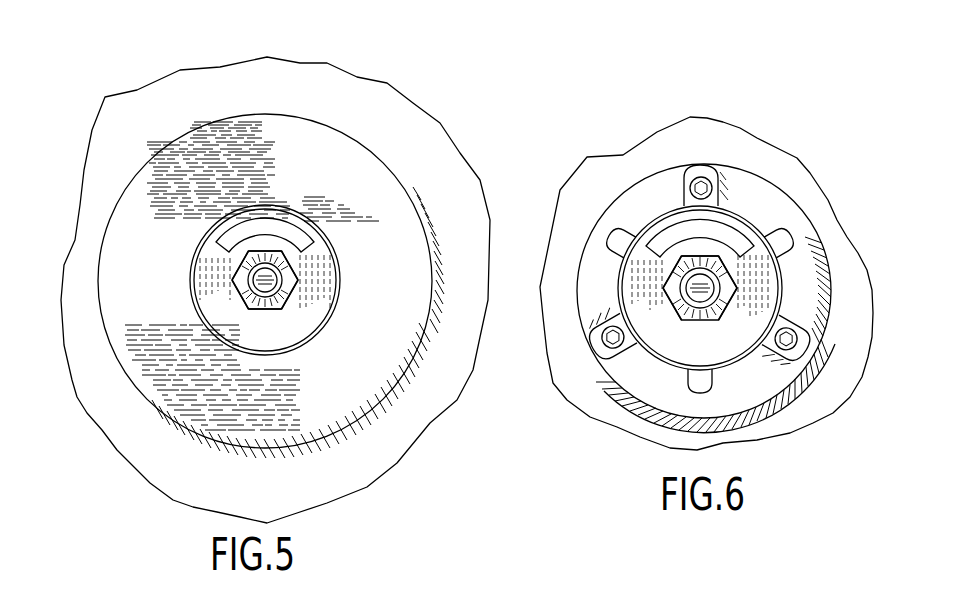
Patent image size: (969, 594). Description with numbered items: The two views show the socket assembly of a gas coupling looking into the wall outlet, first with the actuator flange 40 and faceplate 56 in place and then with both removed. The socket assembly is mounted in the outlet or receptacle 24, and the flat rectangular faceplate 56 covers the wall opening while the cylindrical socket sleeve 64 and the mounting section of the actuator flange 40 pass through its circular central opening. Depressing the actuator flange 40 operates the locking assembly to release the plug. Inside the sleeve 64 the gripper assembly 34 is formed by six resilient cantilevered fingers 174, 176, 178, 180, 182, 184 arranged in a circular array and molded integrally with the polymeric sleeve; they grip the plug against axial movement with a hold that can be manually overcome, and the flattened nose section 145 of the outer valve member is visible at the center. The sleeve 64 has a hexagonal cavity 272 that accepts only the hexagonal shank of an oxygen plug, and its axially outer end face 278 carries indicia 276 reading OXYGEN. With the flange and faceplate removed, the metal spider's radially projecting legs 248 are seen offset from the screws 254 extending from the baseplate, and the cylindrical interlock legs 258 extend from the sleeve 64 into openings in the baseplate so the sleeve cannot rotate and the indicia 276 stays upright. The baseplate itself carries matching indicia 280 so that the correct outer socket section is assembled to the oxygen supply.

In FIG. 6, the outlet or receptacle 24 is at (630, 150).
In FIG. 5, the gripper assembly 34 is at (237, 316).
In FIG. 5, the actuator flange 40 is at (380, 155).
In FIG. 5, the faceplate 56 is at (333, 36).
In FIG. 5, the socket sleeve 64 is at (220, 343).
In FIG. 6, the socket sleeve 64 is at (790, 305).
In FIG. 5, the nose section 145 is at (292, 282).
In FIG. 5, the gripper finger 174 is at (268, 292).
In FIG. 6, the gripper finger 174 is at (703, 318).
In FIG. 5, the gripper finger 176 is at (238, 300).
In FIG. 6, the gripper finger 176 is at (700, 320).
In FIG. 5, the gripper finger 178 is at (243, 262).
In FIG. 6, the gripper finger 178 is at (667, 273).
In FIG. 5, the gripper finger 180 is at (272, 252).
In FIG. 6, the gripper finger 180 is at (712, 255).
In FIG. 5, the gripper finger 182 is at (296, 272).
In FIG. 6, the gripper finger 182 is at (737, 272).
In FIG. 5, the gripper finger 184 is at (282, 310).
In FIG. 6, the gripper finger 184 is at (737, 300).
In FIG. 6, the legs 248 is at (723, 168).
In FIG. 6, the screws 254 is at (708, 185).
In FIG. 6, the interlock legs 258 is at (620, 238).
In FIG. 5, the hexagonal cavity 272 is at (232, 280).
In FIG. 6, the hexagonal cavity 272 is at (664, 288).
In FIG. 5, the indicia 276 is at (330, 167).
In FIG. 6, the indicia 276 is at (733, 222).
In FIG. 5, the outer end face 278 is at (303, 334).
In FIG. 6, the indicia 280 is at (638, 210).